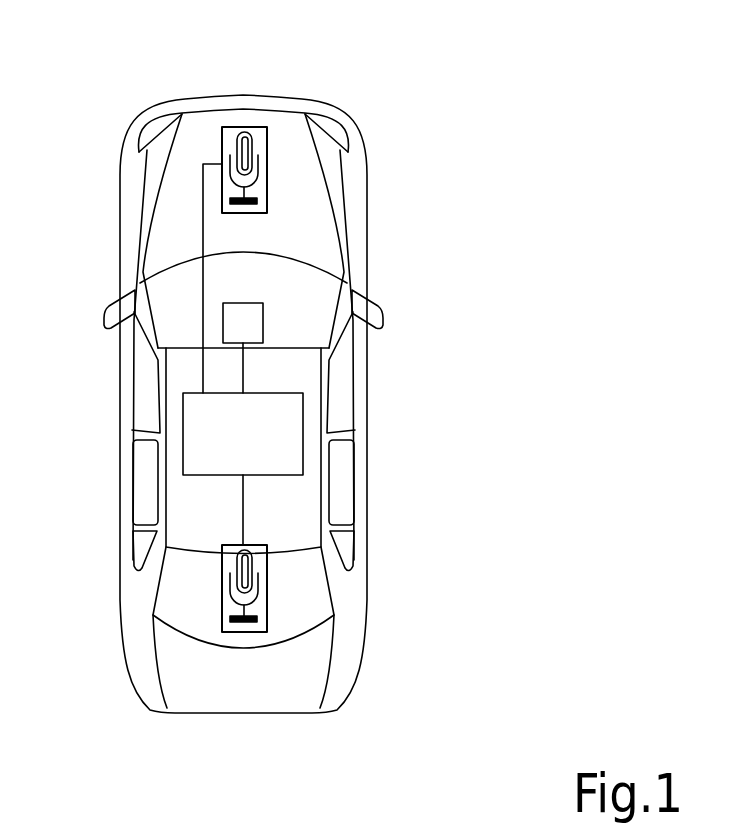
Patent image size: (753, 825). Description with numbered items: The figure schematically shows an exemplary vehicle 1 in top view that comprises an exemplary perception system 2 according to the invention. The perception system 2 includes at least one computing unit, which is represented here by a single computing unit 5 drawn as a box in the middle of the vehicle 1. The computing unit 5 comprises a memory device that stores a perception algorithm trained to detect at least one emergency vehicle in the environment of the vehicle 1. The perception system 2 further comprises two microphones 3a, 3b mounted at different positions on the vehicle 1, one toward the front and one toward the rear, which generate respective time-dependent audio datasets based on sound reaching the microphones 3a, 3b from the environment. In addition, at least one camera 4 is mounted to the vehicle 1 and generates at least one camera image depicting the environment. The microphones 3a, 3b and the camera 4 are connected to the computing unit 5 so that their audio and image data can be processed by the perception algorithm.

The vehicle 1 is at (367, 210).
The perception system 2 is at (181, 293).
The microphone 3a is at (242, 127).
The microphone 3b is at (243, 632).
The camera 4 is at (263, 325).
The computing unit 5 is at (303, 430).